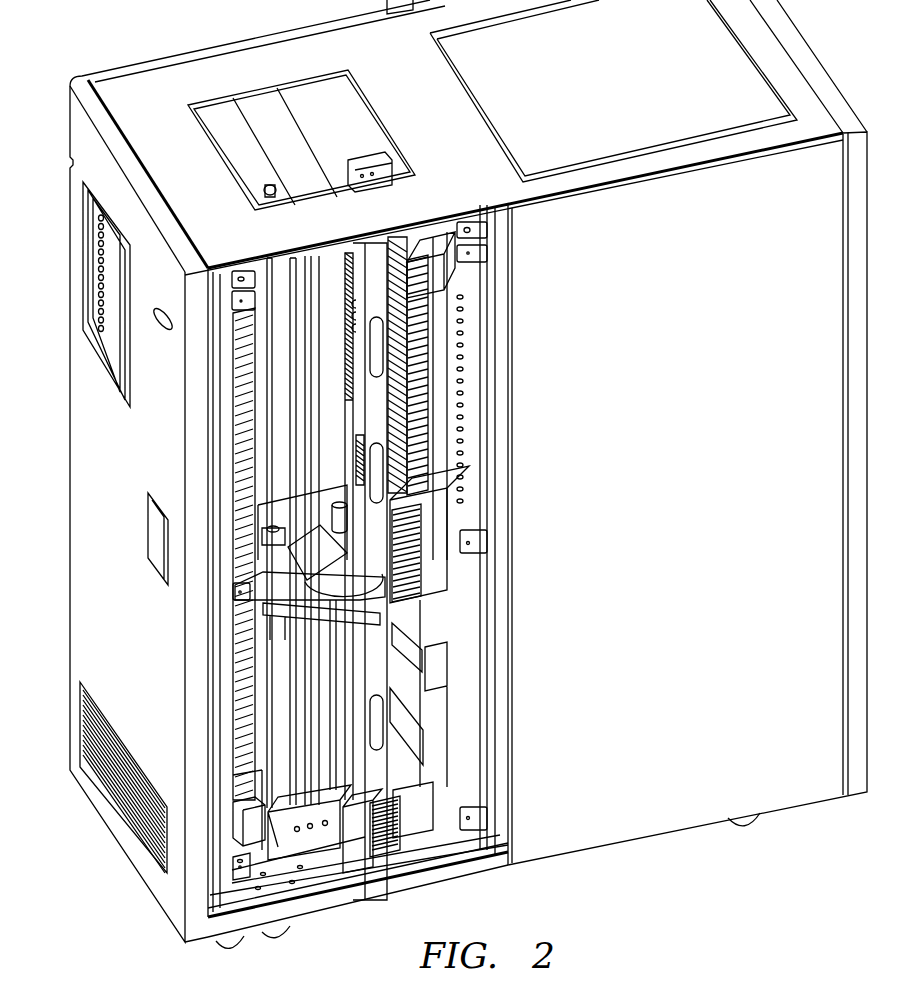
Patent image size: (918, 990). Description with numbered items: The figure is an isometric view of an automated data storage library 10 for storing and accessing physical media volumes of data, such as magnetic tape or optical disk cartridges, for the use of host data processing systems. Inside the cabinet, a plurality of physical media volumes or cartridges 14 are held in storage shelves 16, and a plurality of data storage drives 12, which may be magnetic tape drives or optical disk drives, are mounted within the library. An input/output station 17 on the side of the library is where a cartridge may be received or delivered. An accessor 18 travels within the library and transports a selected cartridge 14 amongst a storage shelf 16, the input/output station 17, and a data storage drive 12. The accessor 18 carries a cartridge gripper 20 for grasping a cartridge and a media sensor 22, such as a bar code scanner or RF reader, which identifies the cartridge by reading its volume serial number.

The automated data storage library 10 is at (257, 57).
The data storage drive 12 is at (437, 593).
The physical media volume 14 is at (235, 392).
The storage shelf 16 is at (385, 417).
The input/output station 17 is at (95, 255).
The accessor 18 is at (273, 845).
The cartridge gripper 20 is at (370, 602).
The media sensor 22 is at (315, 538).